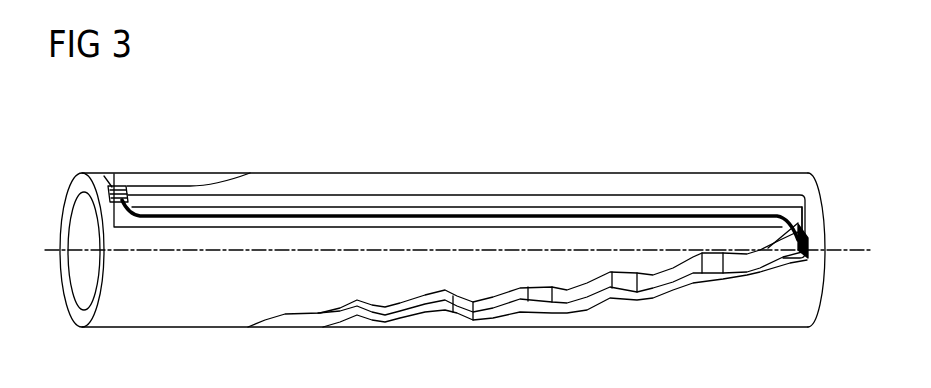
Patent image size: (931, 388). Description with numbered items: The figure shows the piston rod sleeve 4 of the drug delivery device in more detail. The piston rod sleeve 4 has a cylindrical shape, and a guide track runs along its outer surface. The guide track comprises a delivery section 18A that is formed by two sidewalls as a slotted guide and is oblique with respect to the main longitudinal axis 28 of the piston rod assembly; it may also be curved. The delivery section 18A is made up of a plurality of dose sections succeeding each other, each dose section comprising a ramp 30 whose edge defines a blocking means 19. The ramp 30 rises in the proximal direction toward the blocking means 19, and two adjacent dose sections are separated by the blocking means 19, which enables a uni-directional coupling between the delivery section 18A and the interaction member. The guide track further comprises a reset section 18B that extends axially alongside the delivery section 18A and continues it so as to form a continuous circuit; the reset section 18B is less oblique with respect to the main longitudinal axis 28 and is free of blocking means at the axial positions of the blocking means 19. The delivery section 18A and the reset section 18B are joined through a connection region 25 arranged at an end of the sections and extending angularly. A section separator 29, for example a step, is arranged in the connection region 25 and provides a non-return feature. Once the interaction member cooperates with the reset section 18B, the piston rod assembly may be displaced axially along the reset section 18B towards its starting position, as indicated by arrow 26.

The piston rod sleeve 4 is at (183, 313).
The delivery section 18A is at (192, 178).
The reset section 18B is at (288, 213).
The blocking means 19 is at (543, 312).
The connection region 25 is at (121, 197).
The arrow 26 is at (668, 203).
The main longitudinal axis 28 is at (857, 255).
The section separator 29 is at (112, 190).
The ramp 30 is at (653, 285).